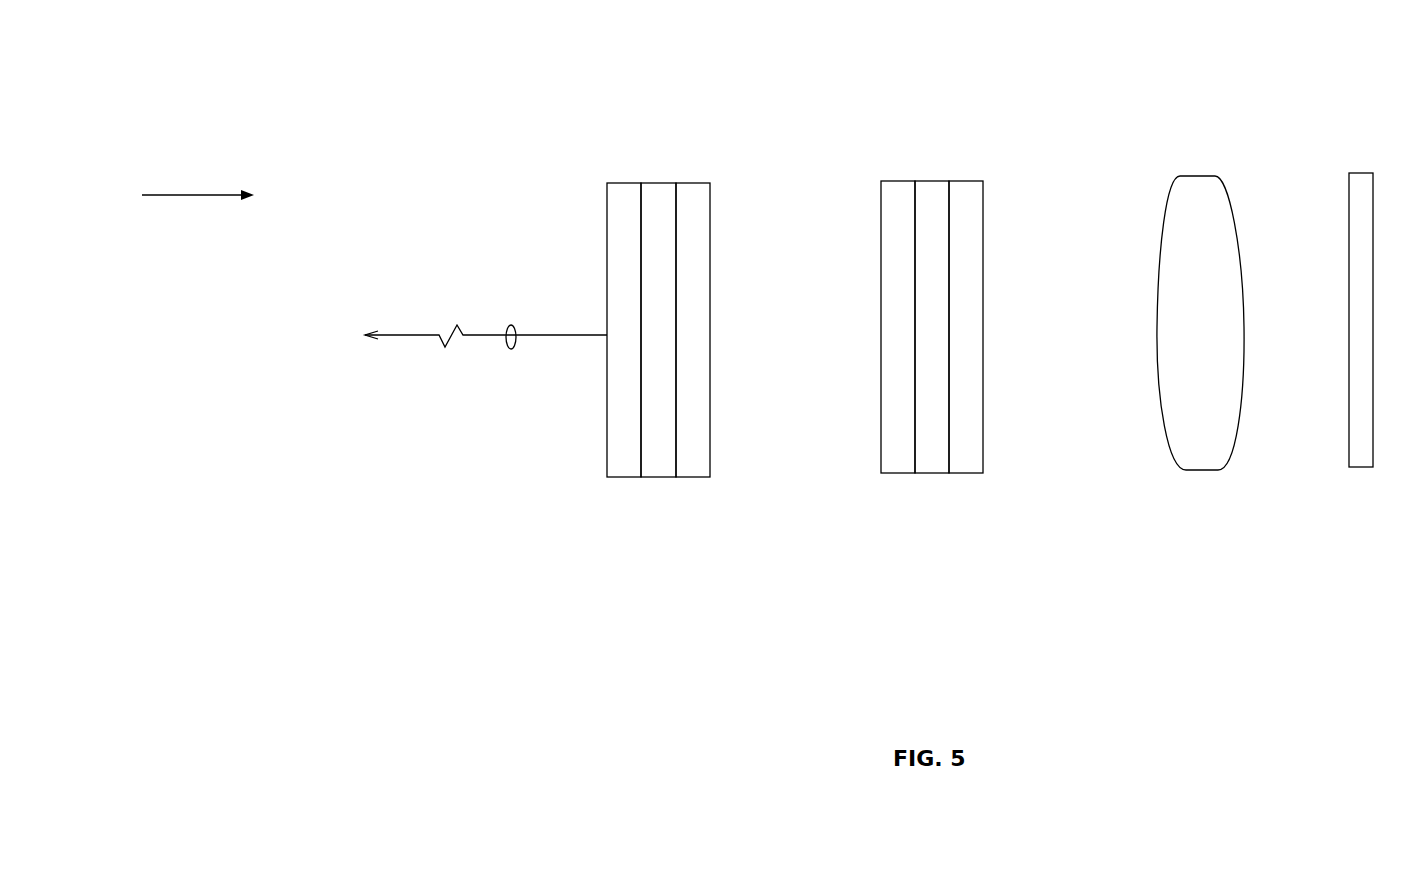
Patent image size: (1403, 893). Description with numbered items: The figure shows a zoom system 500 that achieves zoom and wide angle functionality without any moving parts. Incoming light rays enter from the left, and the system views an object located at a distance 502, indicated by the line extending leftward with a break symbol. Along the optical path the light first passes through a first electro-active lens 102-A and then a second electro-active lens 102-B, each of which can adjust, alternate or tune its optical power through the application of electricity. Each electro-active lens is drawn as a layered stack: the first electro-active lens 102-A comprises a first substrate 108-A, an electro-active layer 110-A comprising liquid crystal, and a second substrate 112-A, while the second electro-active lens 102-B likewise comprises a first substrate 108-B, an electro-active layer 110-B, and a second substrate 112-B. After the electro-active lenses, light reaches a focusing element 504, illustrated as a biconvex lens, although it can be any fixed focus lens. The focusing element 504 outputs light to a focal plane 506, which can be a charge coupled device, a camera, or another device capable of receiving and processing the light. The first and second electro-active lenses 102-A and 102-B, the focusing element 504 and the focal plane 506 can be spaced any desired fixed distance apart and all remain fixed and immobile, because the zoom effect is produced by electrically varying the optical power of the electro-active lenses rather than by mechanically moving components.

The zoom system 500 is at (285, 51).
The distance 502 is at (508, 348).
The first electro-active lens 102-A is at (658, 370).
The second electro-active lens 102-B is at (944, 368).
The first substrate 108-A is at (622, 183).
The electro-active layer 110-A is at (659, 477).
The second substrate 112-A is at (690, 183).
The first substrate 108-B is at (897, 181).
The electro-active layer 110-B is at (932, 473).
The second substrate 112-B is at (964, 181).
The focusing element 504 is at (1202, 470).
The focal plane 506 is at (1362, 467).